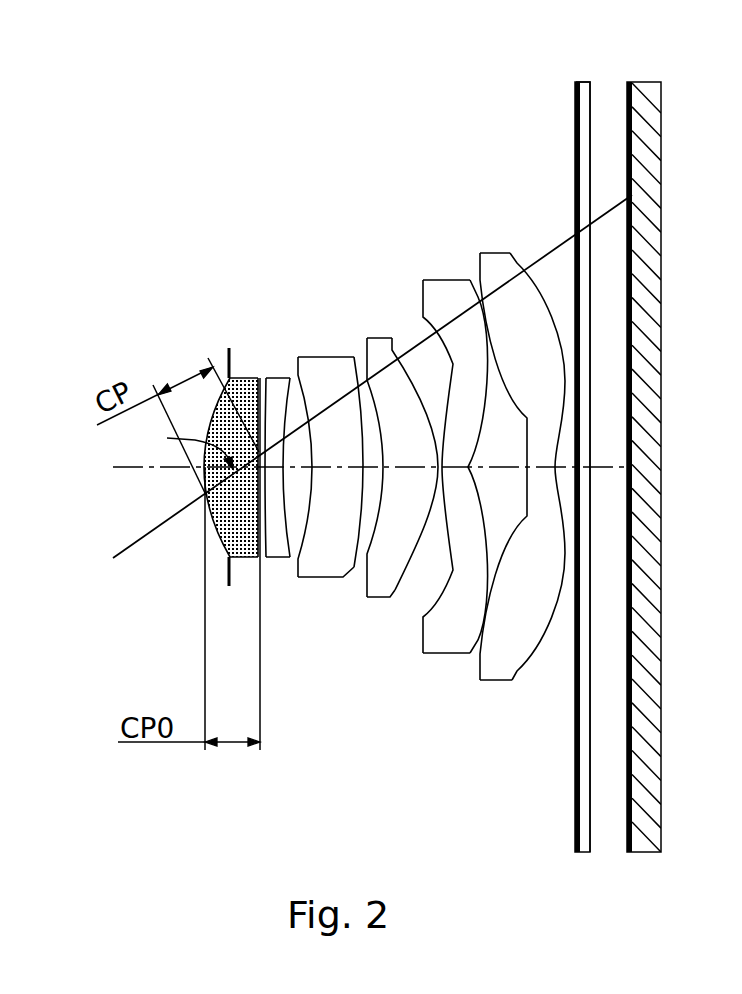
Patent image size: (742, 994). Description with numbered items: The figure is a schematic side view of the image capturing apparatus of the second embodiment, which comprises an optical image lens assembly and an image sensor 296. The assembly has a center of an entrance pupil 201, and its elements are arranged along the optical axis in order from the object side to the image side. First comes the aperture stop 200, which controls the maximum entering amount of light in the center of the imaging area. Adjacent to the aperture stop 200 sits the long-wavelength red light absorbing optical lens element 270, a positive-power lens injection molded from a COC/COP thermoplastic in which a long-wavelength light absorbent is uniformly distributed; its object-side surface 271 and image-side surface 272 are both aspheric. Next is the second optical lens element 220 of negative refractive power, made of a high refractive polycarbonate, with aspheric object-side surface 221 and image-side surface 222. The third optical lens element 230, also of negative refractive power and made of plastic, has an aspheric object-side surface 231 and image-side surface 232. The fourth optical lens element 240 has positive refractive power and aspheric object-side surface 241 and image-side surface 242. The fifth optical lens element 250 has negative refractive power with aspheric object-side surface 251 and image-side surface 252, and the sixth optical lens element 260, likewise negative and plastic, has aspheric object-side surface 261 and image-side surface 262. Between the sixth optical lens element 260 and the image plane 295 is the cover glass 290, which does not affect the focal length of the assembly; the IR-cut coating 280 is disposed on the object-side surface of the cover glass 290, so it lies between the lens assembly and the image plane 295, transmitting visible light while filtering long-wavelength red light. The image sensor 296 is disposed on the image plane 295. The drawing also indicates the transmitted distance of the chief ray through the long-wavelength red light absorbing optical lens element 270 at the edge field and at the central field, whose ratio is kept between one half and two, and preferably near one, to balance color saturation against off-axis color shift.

The aperture stop 200 is at (228, 358).
The center of an entrance pupil 201 is at (174, 450).
The second optical lens element 220 is at (217, 508).
The object-side surface of the second optical lens element 221 is at (266, 557).
The image-side surface of the second optical lens element 222 is at (288, 558).
The third optical lens element 230 is at (324, 481).
The object-side surface of the third optical lens element 231 is at (318, 577).
The image-side surface of the third optical lens element 232 is at (352, 577).
The fourth optical lens element 240 is at (369, 511).
The object-side surface of the fourth optical lens element 241 is at (367, 597).
The image-side surface of the fourth optical lens element 242 is at (382, 600).
The fifth optical lens element 250 is at (434, 488).
The object-side surface of the fifth optical lens element 251 is at (433, 608).
The image-side surface of the fifth optical lens element 252 is at (472, 643).
The sixth optical lens element 260 is at (480, 510).
The object-side surface of the sixth optical lens element 261 is at (477, 670).
The image-side surface of the sixth optical lens element 262 is at (510, 670).
The long-wavelength red light absorbing optical lens element 270 is at (190, 460).
The object-side surface of the long-wavelength red light absorbing optical lens elem 271 is at (208, 548).
The image-side surface of the long-wavelength red light absorbing optical lens eleme 272 is at (235, 558).
The IR-cut coating 280 is at (575, 120).
The cover glass 290 is at (583, 82).
The image plane 295 is at (628, 103).
The image sensor 296 is at (643, 100).